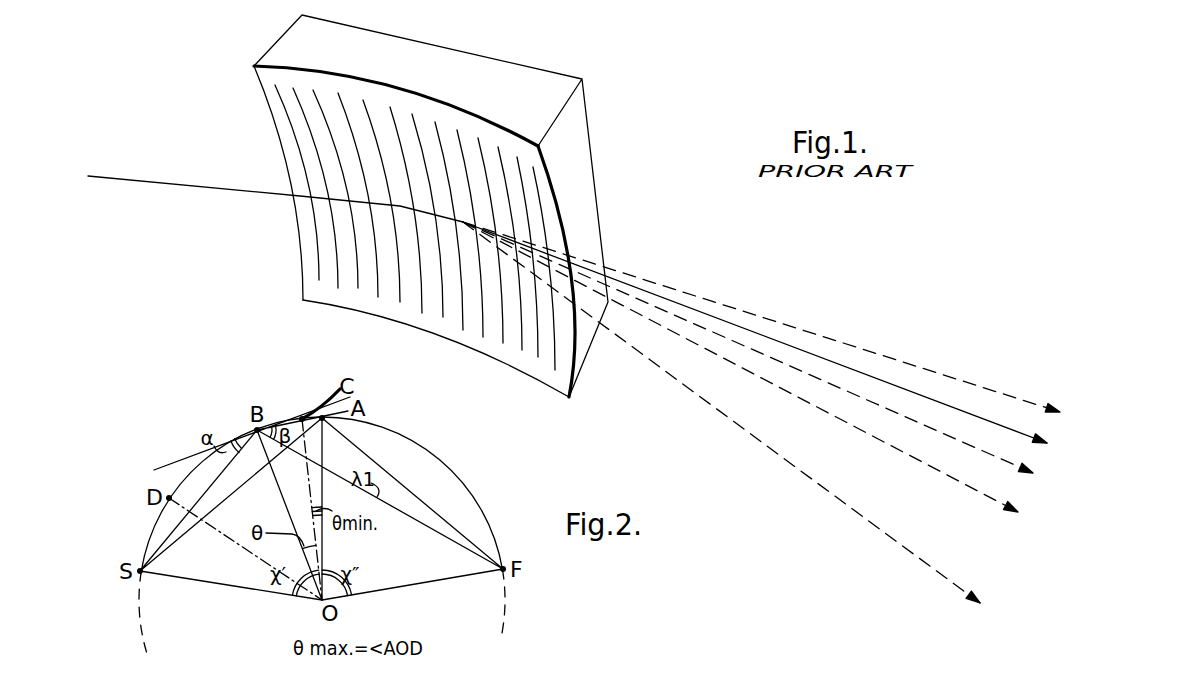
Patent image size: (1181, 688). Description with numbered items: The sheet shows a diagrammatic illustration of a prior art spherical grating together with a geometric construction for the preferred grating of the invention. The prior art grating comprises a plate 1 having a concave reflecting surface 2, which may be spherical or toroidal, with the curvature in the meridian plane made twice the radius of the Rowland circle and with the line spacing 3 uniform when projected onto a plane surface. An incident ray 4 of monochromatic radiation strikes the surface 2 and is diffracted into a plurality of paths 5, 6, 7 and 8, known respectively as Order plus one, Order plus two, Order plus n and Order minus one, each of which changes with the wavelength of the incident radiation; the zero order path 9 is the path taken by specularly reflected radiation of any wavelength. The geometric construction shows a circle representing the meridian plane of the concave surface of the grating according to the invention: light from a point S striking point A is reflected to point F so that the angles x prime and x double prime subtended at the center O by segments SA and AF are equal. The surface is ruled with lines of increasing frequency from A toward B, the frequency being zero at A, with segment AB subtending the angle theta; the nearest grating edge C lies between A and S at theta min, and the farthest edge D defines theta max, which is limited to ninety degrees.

The plate 1 is at (578, 157).
The concave reflecting surface 2 is at (458, 118).
The line spacing 3 is at (392, 285).
The incident ray 4 is at (255, 193).
The Order +1 path 5 is at (724, 341).
The Order +2 path 6 is at (742, 372).
The Order +n path 7 is at (879, 534).
The Order −1 path 8 is at (988, 390).
The zero order path 9 is at (907, 392).